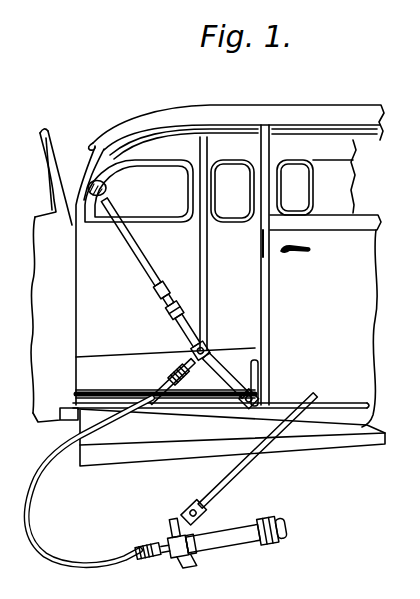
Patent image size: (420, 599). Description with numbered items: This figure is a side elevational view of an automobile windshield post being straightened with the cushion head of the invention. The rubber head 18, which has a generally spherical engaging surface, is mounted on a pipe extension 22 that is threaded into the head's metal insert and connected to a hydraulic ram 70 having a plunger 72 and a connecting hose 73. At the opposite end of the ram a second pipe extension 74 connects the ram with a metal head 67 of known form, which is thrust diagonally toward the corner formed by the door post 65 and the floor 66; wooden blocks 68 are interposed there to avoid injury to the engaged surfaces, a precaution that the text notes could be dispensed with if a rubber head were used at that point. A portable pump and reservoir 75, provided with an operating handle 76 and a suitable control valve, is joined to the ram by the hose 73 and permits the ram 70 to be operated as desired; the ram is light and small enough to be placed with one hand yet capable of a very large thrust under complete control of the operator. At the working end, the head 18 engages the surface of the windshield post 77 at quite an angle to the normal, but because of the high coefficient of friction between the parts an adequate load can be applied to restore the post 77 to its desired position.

The head 18 is at (107, 184).
The pipe extension 22 is at (129, 246).
The door post 65 is at (270, 321).
The floor 66 is at (222, 408).
The metal head 67 is at (255, 399).
The wooden blocks 68 is at (259, 367).
The hydraulic ram 70 is at (184, 328).
The plunger 72 is at (180, 299).
The connecting hose 73 is at (36, 477).
The pipe extension 74 is at (222, 363).
The portable pump and reservoir 75 is at (222, 534).
The operating handle 76 is at (250, 461).
The windshield post 77 is at (80, 178).